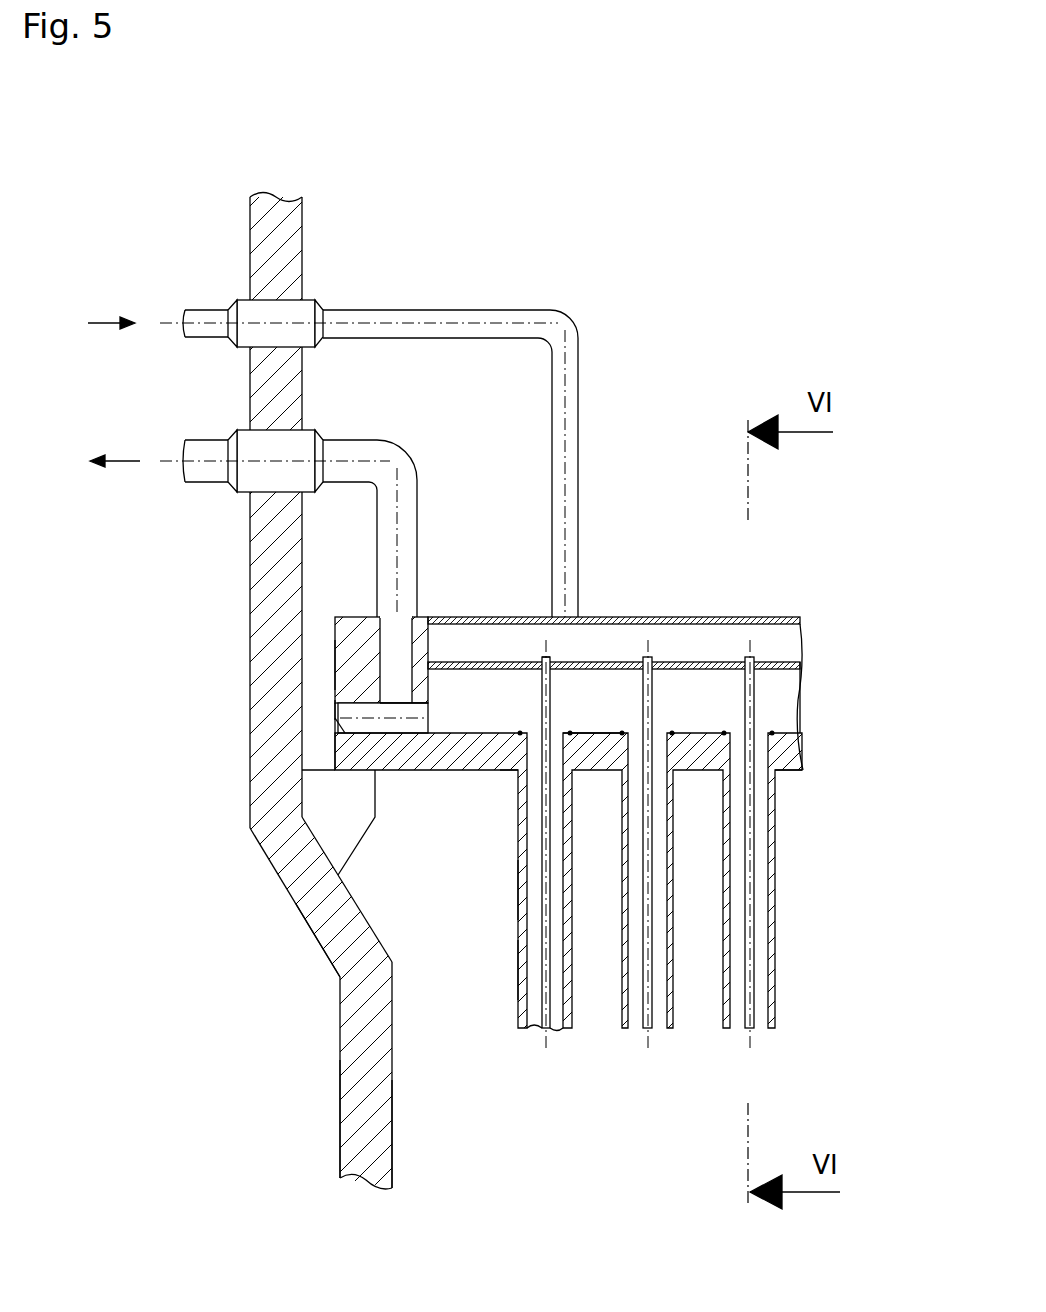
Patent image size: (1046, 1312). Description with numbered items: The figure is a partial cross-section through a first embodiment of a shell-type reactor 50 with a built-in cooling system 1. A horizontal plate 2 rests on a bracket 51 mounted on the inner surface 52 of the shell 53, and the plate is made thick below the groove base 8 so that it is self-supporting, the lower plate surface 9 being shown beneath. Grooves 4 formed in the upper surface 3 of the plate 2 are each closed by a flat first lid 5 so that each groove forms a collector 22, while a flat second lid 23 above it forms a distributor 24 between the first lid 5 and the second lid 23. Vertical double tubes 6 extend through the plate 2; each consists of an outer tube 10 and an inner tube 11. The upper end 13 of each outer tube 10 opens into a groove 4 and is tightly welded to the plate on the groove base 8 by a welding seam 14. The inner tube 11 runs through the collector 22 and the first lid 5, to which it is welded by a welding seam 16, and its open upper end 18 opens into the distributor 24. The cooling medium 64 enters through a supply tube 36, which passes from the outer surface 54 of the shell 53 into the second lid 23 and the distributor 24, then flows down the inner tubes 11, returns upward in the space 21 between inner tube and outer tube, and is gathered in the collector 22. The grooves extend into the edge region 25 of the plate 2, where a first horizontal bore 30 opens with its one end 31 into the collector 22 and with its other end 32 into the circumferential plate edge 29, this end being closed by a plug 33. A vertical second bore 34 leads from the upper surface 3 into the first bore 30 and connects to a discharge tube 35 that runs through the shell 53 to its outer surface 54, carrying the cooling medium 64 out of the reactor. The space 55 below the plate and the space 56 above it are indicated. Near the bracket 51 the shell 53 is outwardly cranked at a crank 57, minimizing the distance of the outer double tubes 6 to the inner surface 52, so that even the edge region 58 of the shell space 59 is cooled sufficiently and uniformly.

The cooling system 1 is at (677, 440).
The horizontal plate 2 is at (795, 770).
The upper surface 3 is at (615, 659).
The groove 4 is at (795, 655).
The first lid 5 is at (628, 660).
The double tube 6 is at (515, 972).
The groove base 8 is at (603, 733).
The lower plate surface 9 is at (782, 770).
The outer tube 10 is at (570, 1028).
The inner tube 11 is at (535, 1028).
The upper end of outer tube 13 is at (515, 775).
The welding seam 14 is at (575, 733).
The welding seam 16 is at (537, 660).
The upper end of inner tube 18 is at (547, 660).
The space 21 is at (527, 885).
The collector 22 is at (683, 712).
The second lid 23 is at (675, 617).
The distributor 24 is at (708, 645).
The edge region 25 is at (352, 617).
The circumferential plate edge 29 is at (338, 665).
The first horizontal bore 30 is at (417, 728).
The first end of first bore 31 is at (430, 702).
The second end of first bore 32 is at (340, 720).
The plug 33 is at (338, 712).
The second bore 34 is at (407, 613).
The discharge tube 35 is at (418, 507).
The supply tube 36 is at (512, 310).
The shell-type reactor 50 is at (280, 195).
The bracket 51 is at (335, 847).
The inner surface of shell 52 is at (395, 1140).
The shell 53 is at (355, 1038).
The outer surface of shell 54 is at (340, 1112).
The space below plate 55 is at (689, 1135).
The space above plate 56 is at (631, 360).
The crank 57 is at (320, 930).
The edge region of shell space 58 is at (436, 1018).
The shell space 59 is at (836, 770).
The cooling medium 64 is at (100, 316).